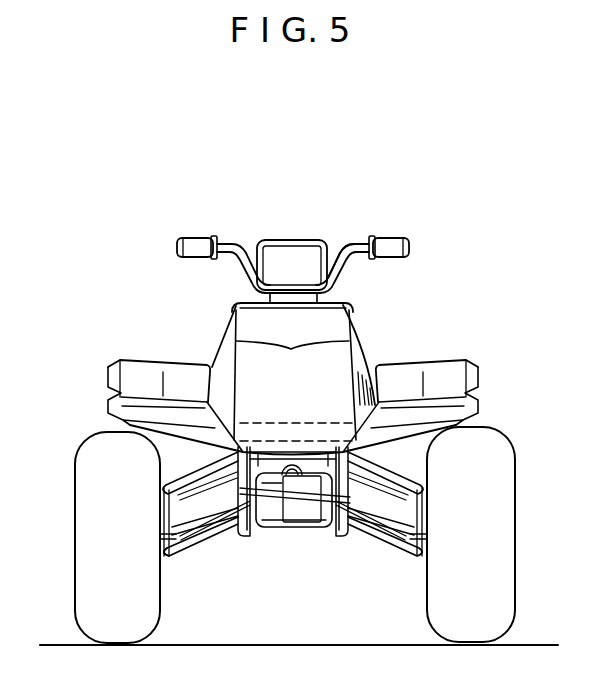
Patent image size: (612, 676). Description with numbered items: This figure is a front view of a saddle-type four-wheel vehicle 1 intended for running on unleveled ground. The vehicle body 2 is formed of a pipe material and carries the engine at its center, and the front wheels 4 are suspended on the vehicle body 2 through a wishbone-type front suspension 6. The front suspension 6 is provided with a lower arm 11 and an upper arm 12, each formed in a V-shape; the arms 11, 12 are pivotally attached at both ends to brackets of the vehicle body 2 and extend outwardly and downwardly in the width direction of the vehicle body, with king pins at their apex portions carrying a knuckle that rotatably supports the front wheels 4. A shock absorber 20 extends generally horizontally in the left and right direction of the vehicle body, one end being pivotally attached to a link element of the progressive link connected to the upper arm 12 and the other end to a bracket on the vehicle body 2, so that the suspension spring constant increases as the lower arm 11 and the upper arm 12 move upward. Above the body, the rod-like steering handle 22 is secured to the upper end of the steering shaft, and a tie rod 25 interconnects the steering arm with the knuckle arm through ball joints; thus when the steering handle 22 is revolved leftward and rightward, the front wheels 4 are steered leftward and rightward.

The saddle-type four-wheel vehicle 1 is at (322, 238).
The rod-like steering handle 22 is at (357, 248).
The shock absorber 20 is at (303, 435).
The vehicle body 2 is at (328, 521).
The front wheels 4 is at (90, 578).
The upper arm 12 is at (197, 479).
The lower arm 11 is at (217, 543).
The tie rod 25 is at (228, 513).
The wishbone-type front suspension 6 is at (184, 564).